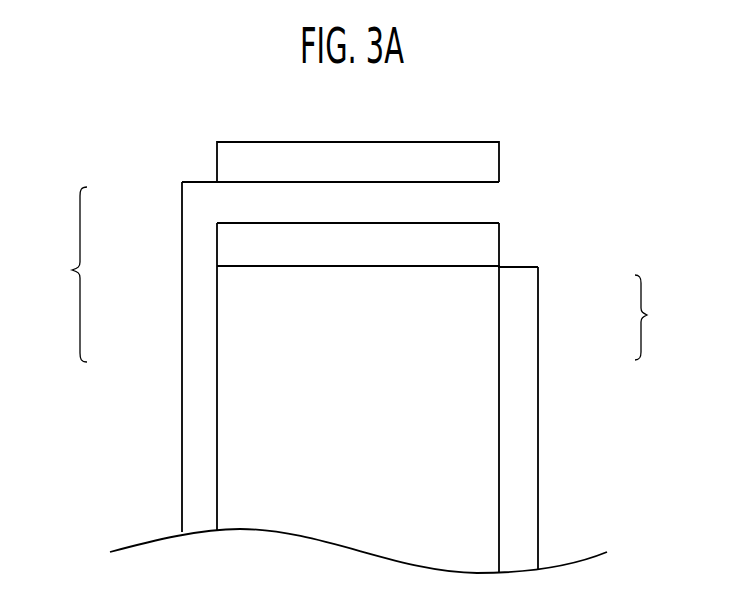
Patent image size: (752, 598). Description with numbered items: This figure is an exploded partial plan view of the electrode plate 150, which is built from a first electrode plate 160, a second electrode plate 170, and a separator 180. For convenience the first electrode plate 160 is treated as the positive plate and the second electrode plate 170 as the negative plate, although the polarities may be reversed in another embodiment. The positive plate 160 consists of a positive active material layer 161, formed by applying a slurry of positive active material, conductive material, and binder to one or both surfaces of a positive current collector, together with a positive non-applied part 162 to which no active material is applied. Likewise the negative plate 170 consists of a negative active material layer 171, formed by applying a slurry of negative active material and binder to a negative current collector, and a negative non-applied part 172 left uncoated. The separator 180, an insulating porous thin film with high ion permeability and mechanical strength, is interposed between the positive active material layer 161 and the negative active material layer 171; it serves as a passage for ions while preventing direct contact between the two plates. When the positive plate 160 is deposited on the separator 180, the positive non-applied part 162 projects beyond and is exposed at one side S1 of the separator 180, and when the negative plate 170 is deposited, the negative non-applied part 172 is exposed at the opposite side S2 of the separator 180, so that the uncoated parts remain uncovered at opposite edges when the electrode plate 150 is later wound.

The electrode plate 150 is at (132, 410).
The first electrode plate 160 is at (54, 274).
The positive active material layer 161 is at (232, 203).
The positive non-applied part 162 is at (198, 352).
The second electrode plate 170 is at (666, 317).
The negative active material layer 171 is at (485, 350).
The negative non-applied part 172 is at (526, 295).
The separator 180 is at (495, 158).
The one side of the separator S1 is at (217, 453).
The other side of the separator S2 is at (500, 417).